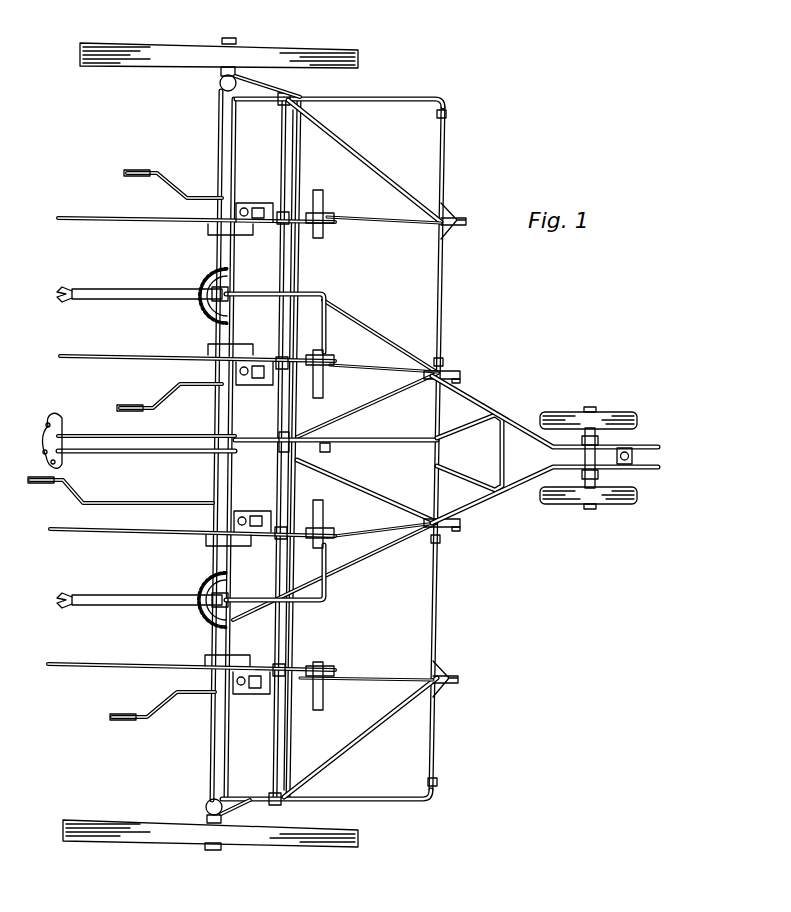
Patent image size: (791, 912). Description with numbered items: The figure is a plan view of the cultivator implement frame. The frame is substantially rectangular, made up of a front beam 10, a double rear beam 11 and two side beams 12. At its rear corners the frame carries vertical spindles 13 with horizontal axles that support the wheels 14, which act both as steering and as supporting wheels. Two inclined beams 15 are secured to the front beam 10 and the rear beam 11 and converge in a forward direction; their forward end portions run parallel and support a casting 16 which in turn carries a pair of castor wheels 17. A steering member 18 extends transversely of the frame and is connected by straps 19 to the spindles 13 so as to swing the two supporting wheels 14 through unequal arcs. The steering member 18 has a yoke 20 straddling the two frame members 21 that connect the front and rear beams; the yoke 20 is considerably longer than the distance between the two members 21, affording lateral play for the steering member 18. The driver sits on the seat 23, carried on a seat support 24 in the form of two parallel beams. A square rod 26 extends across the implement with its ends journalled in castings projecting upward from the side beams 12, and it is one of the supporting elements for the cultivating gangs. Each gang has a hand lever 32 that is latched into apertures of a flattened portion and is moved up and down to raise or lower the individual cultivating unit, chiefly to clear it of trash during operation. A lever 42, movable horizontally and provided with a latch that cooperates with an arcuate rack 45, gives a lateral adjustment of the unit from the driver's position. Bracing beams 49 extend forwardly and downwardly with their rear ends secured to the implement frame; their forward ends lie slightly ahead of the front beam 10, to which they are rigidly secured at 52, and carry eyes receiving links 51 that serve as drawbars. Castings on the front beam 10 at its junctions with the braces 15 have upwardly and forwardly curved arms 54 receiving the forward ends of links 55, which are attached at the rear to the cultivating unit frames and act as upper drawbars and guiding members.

The front beam 10 is at (437, 566).
The double rear beam 11 is at (214, 560).
The side beams 12 is at (368, 98).
The vertical spindles 13 is at (221, 85).
The wheels 14 is at (290, 58).
The inclined beams 15 is at (373, 340).
The casting 16 is at (633, 458).
The castor wheels 17 is at (628, 420).
The steering member 18 is at (293, 576).
The straps 19 is at (248, 84).
The yoke 20 is at (287, 440).
The frame members 21 is at (370, 438).
The seat 23 is at (58, 455).
The seat support 24 is at (135, 453).
The square rod 26 is at (273, 707).
The hand lever 32 is at (82, 221).
The lever 42 is at (105, 293).
The arcuate rack 45 is at (203, 278).
The beams 49 is at (353, 146).
The links 51 is at (343, 223).
The securing point 52 is at (453, 212).
The curved arms 54 is at (460, 375).
The links 55 is at (377, 372).